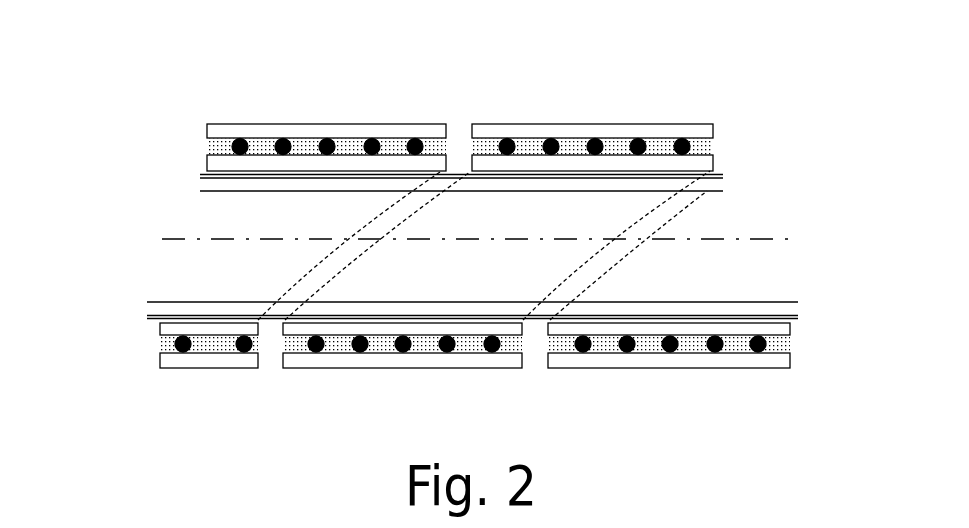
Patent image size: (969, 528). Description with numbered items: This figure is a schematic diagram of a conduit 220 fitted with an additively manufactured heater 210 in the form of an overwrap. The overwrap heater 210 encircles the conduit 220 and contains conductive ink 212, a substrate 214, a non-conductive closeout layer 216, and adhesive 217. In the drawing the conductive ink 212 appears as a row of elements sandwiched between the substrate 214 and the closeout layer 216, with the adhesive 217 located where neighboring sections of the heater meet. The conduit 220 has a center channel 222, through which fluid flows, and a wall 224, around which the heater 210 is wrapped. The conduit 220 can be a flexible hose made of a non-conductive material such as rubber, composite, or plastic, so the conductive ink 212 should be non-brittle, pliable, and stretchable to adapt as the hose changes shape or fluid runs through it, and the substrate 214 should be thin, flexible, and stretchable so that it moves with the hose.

The conduit 220 is at (188, 97).
The additively manufactured heater 210 is at (592, 102).
The adhesive 217 is at (475, 148).
The non-conductive closeout layer 216 is at (677, 124).
The conductive ink 212 is at (690, 150).
The substrate 214 is at (713, 160).
The center channel 222 is at (265, 228).
The wall 224 is at (148, 310).